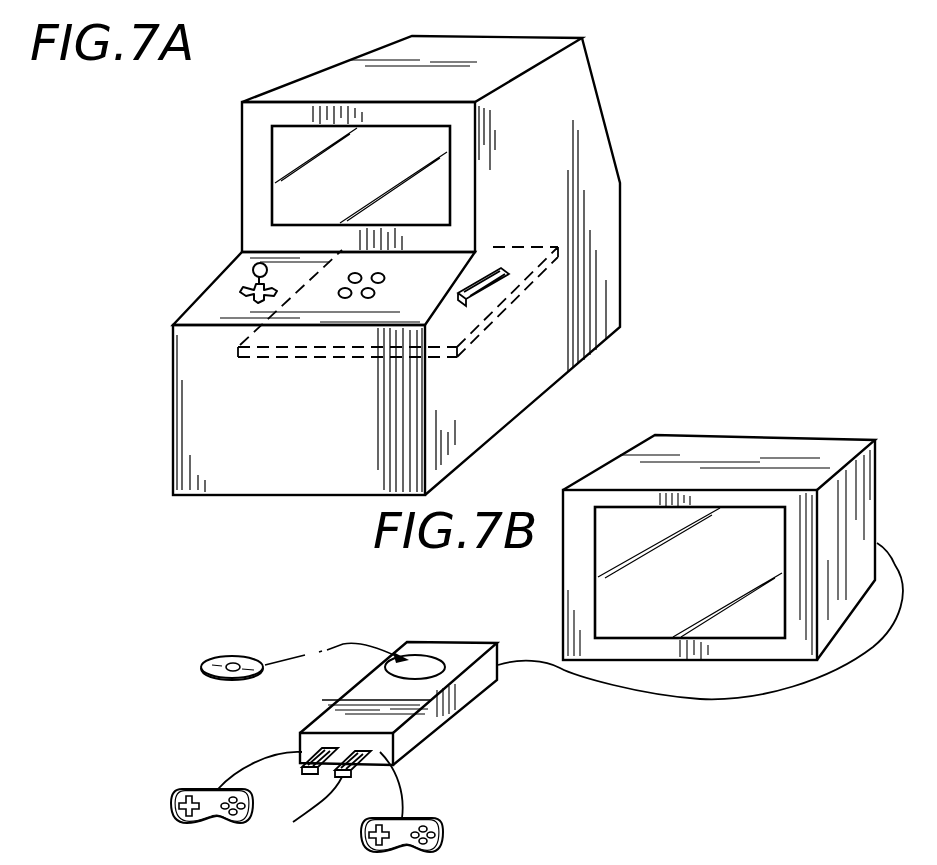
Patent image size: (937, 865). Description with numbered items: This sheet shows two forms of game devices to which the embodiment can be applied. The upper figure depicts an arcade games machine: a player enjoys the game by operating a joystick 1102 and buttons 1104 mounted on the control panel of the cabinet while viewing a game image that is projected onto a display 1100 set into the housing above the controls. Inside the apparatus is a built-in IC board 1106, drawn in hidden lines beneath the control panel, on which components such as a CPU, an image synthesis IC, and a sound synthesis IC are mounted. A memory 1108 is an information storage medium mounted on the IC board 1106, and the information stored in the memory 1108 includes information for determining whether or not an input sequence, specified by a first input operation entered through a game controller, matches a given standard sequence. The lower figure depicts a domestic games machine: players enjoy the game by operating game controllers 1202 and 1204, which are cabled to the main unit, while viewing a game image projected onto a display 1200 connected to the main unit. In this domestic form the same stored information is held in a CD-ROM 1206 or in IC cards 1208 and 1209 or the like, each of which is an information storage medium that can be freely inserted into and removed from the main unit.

In FIG. 7A, the display 1100 is at (296, 160).
In FIG. 7A, the joystick 1102 is at (256, 287).
In FIG. 7A, the buttons 1104 is at (355, 299).
In FIG. 7A, the IC board 1106 is at (482, 337).
In FIG. 7A, the memory 1108 is at (487, 292).
In FIG. 7B, the display 1200 is at (633, 582).
In FIG. 7B, the game controller 1202 is at (170, 811).
In FIG. 7B, the game controller 1204 is at (474, 826).
In FIG. 7B, the CD-ROM 1206 is at (223, 660).
In FIG. 7B, the IC card 1208 is at (313, 753).
In FIG. 7B, the IC card 1209 is at (293, 821).